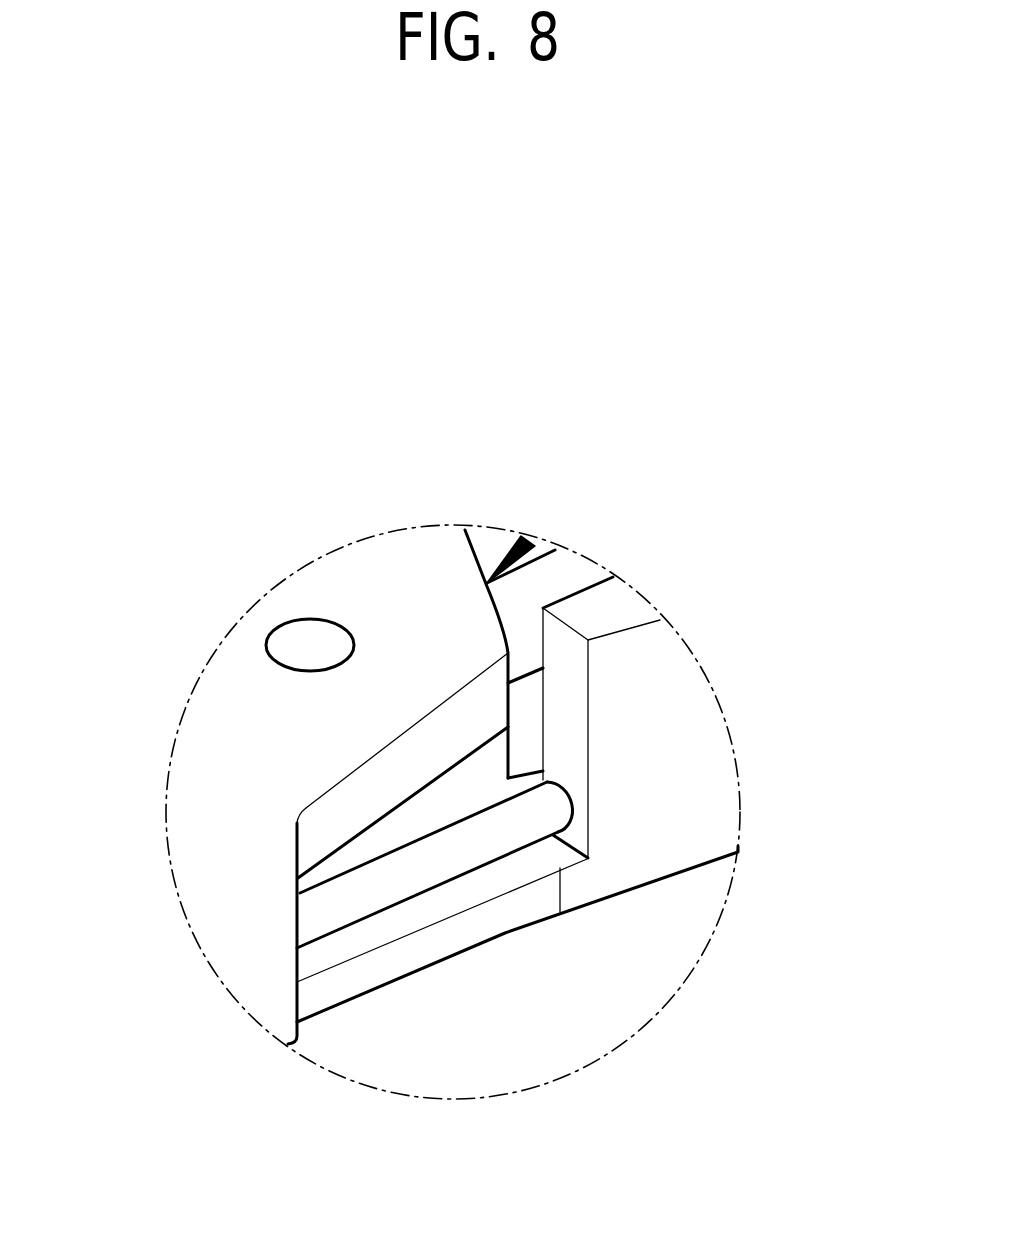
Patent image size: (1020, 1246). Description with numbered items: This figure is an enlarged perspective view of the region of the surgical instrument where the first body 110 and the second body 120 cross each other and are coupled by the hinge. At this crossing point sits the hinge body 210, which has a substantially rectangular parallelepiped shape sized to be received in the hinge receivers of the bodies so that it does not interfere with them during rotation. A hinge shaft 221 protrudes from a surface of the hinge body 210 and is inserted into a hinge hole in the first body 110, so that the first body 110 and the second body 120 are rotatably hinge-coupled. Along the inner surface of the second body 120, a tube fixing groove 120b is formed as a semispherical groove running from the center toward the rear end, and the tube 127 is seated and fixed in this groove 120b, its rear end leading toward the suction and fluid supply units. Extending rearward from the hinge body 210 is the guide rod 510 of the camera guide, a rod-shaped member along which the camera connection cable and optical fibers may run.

The first body 110 is at (195, 723).
The second body 120 is at (667, 710).
The tube fixing groove 120b is at (546, 815).
The tube 127 is at (333, 910).
The hinge body 210 is at (457, 800).
The hinge shaft 221 is at (298, 640).
The guide rod 510 is at (545, 585).